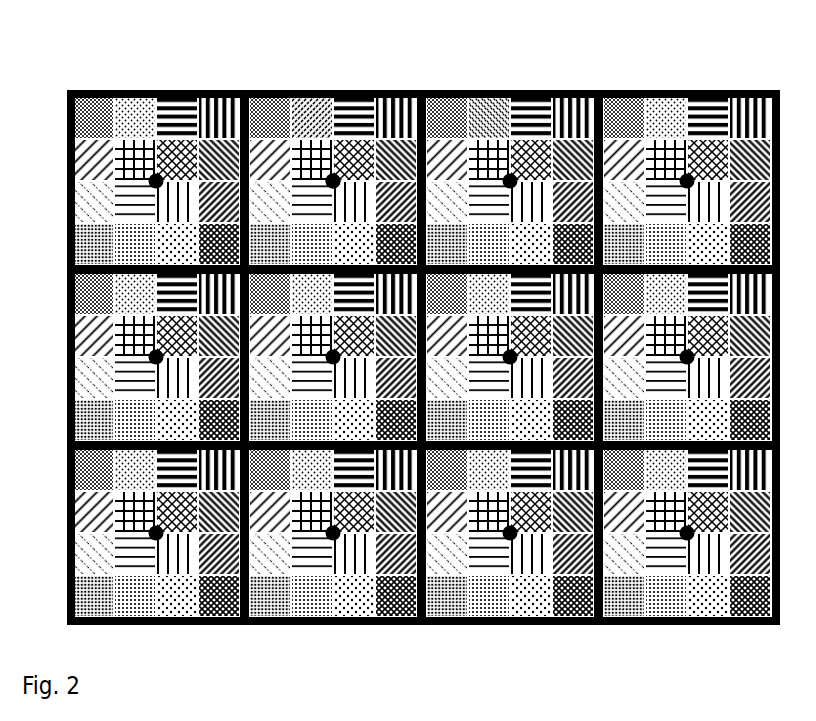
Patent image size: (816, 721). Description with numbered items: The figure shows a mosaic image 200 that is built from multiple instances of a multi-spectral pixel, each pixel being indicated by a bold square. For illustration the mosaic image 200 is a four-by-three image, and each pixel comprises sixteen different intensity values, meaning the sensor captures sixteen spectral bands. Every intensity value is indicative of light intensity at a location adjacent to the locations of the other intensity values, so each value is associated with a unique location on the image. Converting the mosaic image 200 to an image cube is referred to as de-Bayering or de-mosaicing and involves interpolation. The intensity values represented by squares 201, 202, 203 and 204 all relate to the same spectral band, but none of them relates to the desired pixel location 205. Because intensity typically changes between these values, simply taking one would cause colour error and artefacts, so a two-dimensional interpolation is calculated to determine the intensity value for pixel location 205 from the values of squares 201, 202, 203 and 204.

The mosaic image 200 is at (413, 315).
The square 201 is at (310, 113).
The square 202 is at (495, 113).
The square 203 is at (330, 304).
The square 204 is at (506, 304).
The desired pixel location 205 is at (333, 174).